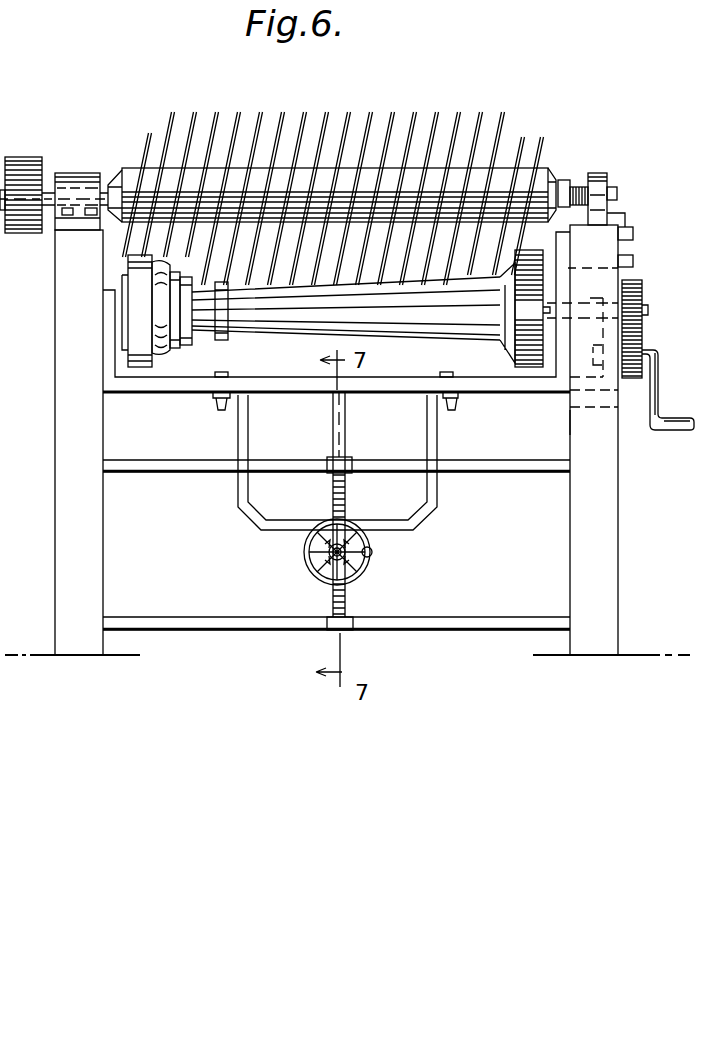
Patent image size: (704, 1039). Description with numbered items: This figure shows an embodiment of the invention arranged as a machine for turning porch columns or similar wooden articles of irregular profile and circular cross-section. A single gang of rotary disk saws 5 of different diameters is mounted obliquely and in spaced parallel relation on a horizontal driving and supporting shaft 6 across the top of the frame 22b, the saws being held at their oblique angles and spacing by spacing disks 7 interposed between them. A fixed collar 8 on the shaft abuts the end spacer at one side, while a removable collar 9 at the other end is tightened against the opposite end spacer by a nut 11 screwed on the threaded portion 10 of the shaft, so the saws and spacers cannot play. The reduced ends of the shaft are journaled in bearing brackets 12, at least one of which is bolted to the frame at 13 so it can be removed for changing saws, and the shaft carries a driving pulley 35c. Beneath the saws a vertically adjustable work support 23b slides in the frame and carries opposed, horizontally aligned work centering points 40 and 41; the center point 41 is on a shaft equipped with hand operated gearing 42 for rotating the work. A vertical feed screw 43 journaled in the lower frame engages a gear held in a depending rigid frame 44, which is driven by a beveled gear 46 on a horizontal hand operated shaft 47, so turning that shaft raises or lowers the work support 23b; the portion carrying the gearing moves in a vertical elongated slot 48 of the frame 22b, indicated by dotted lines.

The rotary disk cutters or saws 5 is at (307, 107).
The driving and supporting shaft 6 is at (45, 192).
The spacing disks 7 is at (327, 170).
The fixed collar 8 is at (107, 182).
The removable collar 9 is at (552, 177).
The threaded portion 10 is at (438, 108).
The nut 11 is at (565, 205).
The bearing brackets 12 is at (70, 175).
The bolts 13 is at (632, 235).
The frame 22b is at (85, 540).
The work support 23b is at (172, 395).
The driving pulley 35c is at (29, 233).
The work centering point 40 is at (138, 309).
The center point 41 is at (556, 311).
The hand operated gearing 42 is at (640, 345).
The vertical feed screw 43 is at (348, 598).
The depending rigid frame 44 is at (430, 512).
The beveled gear 46 is at (322, 548).
The hand operated shaft 47 is at (318, 563).
The vertical elongated slot 48 is at (570, 410).